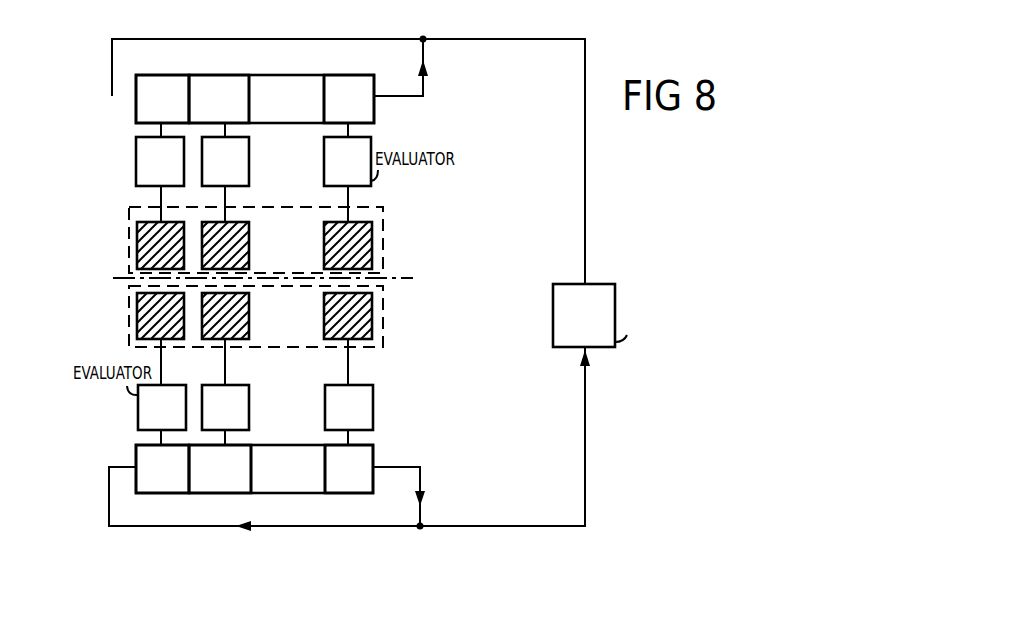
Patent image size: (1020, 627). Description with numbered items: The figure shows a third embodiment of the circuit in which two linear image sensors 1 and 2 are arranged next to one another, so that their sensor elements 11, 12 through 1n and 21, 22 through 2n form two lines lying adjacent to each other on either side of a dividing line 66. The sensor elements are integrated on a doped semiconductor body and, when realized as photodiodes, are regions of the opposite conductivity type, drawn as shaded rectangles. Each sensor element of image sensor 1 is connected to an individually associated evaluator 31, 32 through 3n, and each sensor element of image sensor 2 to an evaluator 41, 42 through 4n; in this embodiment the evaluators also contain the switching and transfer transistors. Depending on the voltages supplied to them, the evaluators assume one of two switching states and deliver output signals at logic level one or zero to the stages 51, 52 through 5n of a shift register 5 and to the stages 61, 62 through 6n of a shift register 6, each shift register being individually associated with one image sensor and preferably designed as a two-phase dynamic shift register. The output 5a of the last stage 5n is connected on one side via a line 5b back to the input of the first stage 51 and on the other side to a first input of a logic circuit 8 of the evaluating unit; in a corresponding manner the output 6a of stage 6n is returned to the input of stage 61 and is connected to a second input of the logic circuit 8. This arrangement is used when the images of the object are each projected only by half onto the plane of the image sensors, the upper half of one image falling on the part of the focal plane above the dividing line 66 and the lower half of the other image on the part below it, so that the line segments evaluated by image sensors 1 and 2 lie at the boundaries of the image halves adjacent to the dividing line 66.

The shift register 6 is at (255, 84).
The shift register stage 61 is at (162, 99).
The shift register stage 62 is at (219, 99).
The shift register stage 6n is at (349, 99).
The output of stage 6n 6a is at (414, 67).
The evaluator 41 is at (160, 161).
The evaluator 42 is at (225, 161).
The evaluator 4n is at (347, 161).
The linear image sensor 2 is at (383, 245).
The sensor element 21 is at (148, 245).
The sensor element 22 is at (237, 245).
The sensor element 2n is at (336, 245).
The dividing line 66 is at (276, 280).
The linear image sensor 1 is at (383, 317).
The sensor element 11 is at (148, 317).
The sensor element 12 is at (237, 316).
The sensor element 1n is at (336, 316).
The evaluator 31 is at (162, 407).
The evaluator 32 is at (225, 407).
The evaluator 3n is at (349, 407).
The shift register 5 is at (254, 484).
The shift register stage 51 is at (162, 469).
The shift register stage 52 is at (220, 469).
The shift register stage 5n is at (349, 469).
The output of stage 5n 5a is at (401, 514).
The line 5b is at (264, 541).
The logic circuit 8 is at (610, 315).